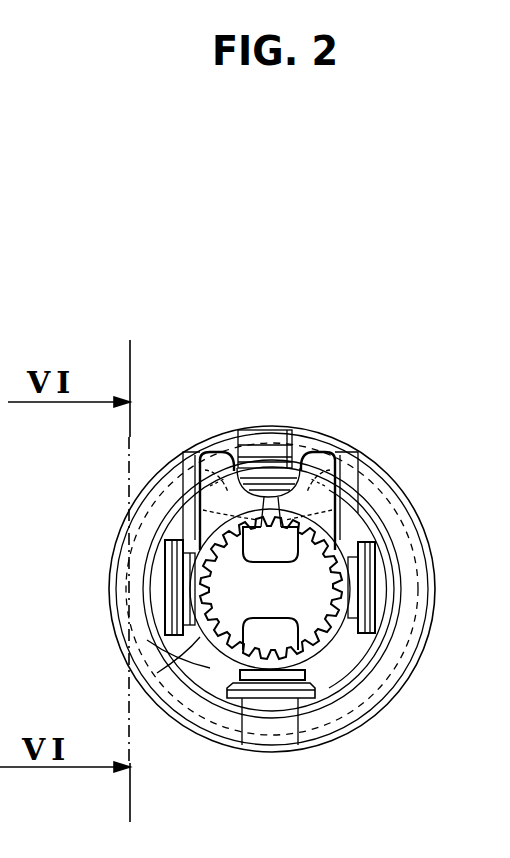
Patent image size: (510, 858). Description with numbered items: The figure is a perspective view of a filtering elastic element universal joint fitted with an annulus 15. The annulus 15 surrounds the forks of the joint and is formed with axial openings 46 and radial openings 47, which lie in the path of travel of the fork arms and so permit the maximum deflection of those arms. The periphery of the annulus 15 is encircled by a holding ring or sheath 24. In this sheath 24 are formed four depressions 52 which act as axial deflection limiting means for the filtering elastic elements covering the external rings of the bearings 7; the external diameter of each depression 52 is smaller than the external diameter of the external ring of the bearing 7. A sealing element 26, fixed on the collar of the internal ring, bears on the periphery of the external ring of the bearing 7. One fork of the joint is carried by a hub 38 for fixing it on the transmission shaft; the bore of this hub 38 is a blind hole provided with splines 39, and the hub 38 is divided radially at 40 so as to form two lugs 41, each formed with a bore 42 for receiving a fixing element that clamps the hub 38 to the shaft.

The bearing 7 is at (296, 434).
The annulus 15 is at (392, 656).
The holding ring or sheath 24 is at (396, 700).
The sealing element 26 is at (148, 532).
The hub 38 is at (352, 698).
The splines 39 is at (163, 660).
The radial division 40 is at (280, 490).
The lugs 41 is at (225, 458).
The bore 42 is at (408, 510).
The axial openings 46 is at (190, 462).
The radial openings 47 is at (185, 615).
The depressions 52 is at (258, 428).